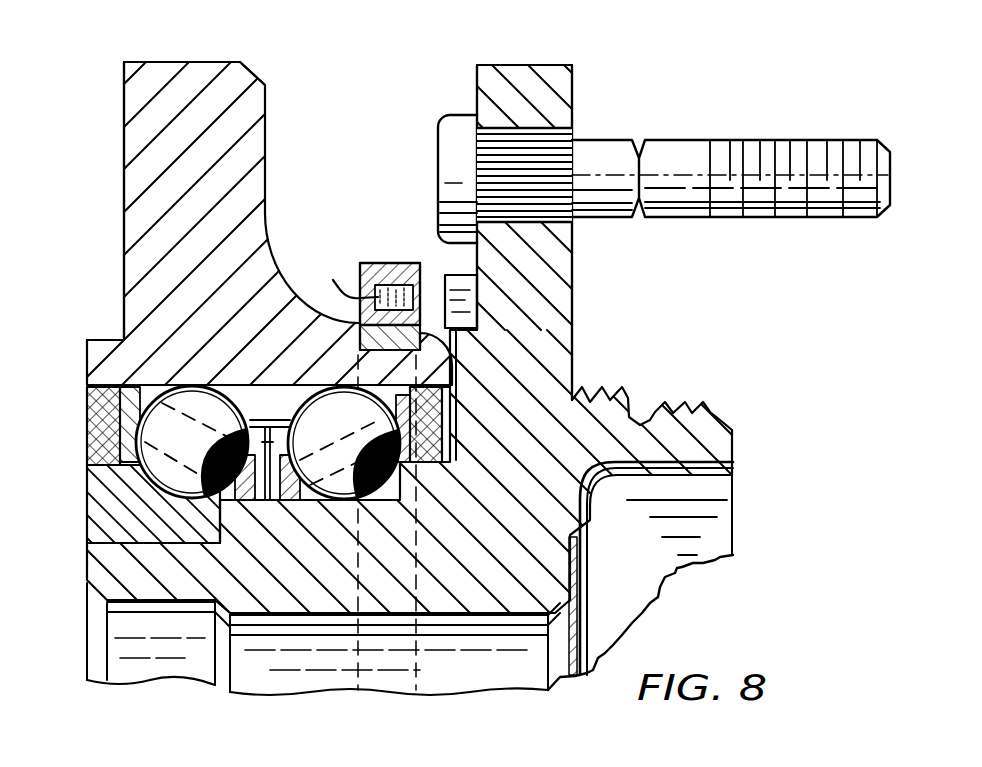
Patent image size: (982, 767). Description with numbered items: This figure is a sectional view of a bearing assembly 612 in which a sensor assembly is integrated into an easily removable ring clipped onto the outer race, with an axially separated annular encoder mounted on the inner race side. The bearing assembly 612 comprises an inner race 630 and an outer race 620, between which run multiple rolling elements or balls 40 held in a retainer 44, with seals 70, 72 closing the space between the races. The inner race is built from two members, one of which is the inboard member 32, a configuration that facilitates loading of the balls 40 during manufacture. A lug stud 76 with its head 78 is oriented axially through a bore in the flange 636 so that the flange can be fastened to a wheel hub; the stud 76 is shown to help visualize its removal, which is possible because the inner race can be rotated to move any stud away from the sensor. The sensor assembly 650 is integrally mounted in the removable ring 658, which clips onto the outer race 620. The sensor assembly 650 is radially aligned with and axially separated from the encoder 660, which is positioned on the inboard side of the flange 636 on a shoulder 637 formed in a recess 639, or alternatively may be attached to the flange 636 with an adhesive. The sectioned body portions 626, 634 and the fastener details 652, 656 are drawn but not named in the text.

The bearing assembly 612 is at (340, 72).
The outer race 620 is at (72, 262).
The bearing cap 626 is at (124, 88).
The housing 634 is at (97, 578).
The flange 636 is at (570, 265).
The head 78 is at (440, 130).
The lug stud 76 is at (783, 140).
The sensor assembly 650 is at (360, 234).
The nut 652 is at (393, 287).
The retaining wire 656 is at (345, 296).
The encoder 660 is at (460, 278).
The recess 639 is at (478, 302).
The shoulder 637 is at (466, 335).
The seal 70 is at (93, 418).
The seal 72 is at (456, 448).
The retainer 44 is at (134, 395).
The balls 40 is at (310, 402).
The inboard member 32 is at (95, 492).
The removable ring 658 is at (352, 650).
The inner race 630 is at (455, 628).